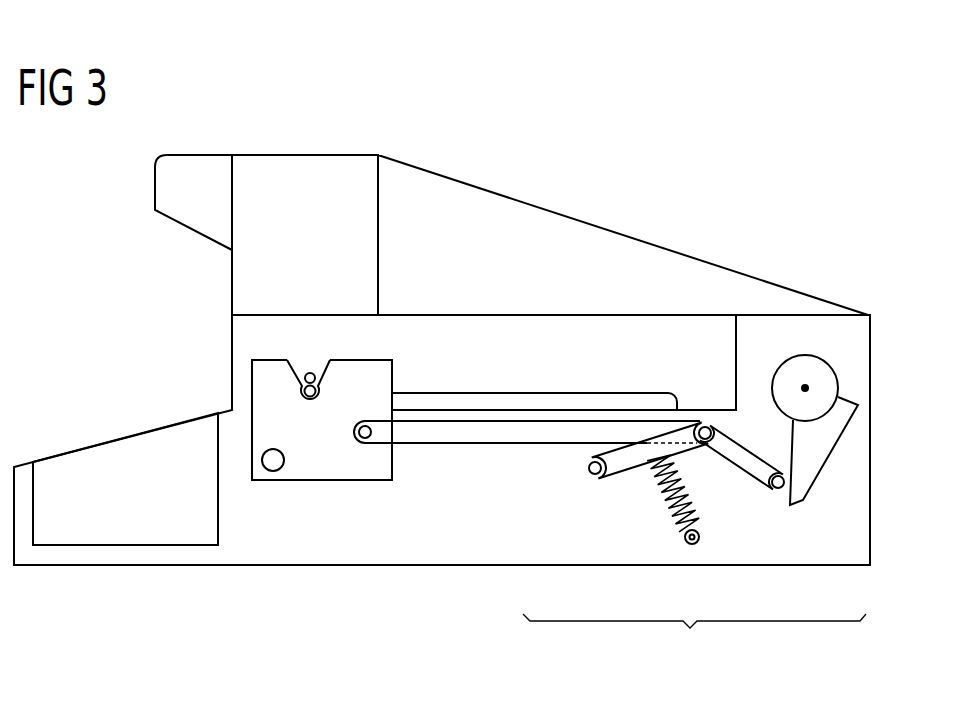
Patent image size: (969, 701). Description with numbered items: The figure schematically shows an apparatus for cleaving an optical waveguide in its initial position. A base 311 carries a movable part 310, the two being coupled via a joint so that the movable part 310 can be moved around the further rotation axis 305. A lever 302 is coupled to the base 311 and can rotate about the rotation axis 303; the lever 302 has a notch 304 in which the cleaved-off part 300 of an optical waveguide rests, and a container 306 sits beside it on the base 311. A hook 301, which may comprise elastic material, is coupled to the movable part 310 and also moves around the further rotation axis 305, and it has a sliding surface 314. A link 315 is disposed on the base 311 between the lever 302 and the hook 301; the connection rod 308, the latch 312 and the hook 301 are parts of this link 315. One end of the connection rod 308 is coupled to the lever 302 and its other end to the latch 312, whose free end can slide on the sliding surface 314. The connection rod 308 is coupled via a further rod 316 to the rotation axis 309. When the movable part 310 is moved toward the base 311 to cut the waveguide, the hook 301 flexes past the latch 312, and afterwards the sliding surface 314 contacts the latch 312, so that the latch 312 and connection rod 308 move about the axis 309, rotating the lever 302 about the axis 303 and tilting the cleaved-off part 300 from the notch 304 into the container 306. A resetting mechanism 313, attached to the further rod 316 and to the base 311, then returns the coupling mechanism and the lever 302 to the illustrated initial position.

The cleaved-off part of an optical waveguide 300 is at (313, 373).
The hook 301 is at (815, 467).
The lever 302 is at (263, 398).
The rotation axis 303 is at (273, 463).
The notch 304 is at (295, 373).
The further rotation axis 305 is at (825, 380).
The container 306 is at (122, 455).
The connection rod 308 is at (515, 432).
The yet another rotation axis 309 is at (602, 478).
The movable part 310 is at (562, 232).
The base 311 is at (422, 550).
The latch 312 is at (743, 462).
The resetting mechanism 313 is at (672, 527).
The sliding surface 314 is at (775, 433).
The link 315 is at (694, 638).
The further rod 316 is at (622, 460).